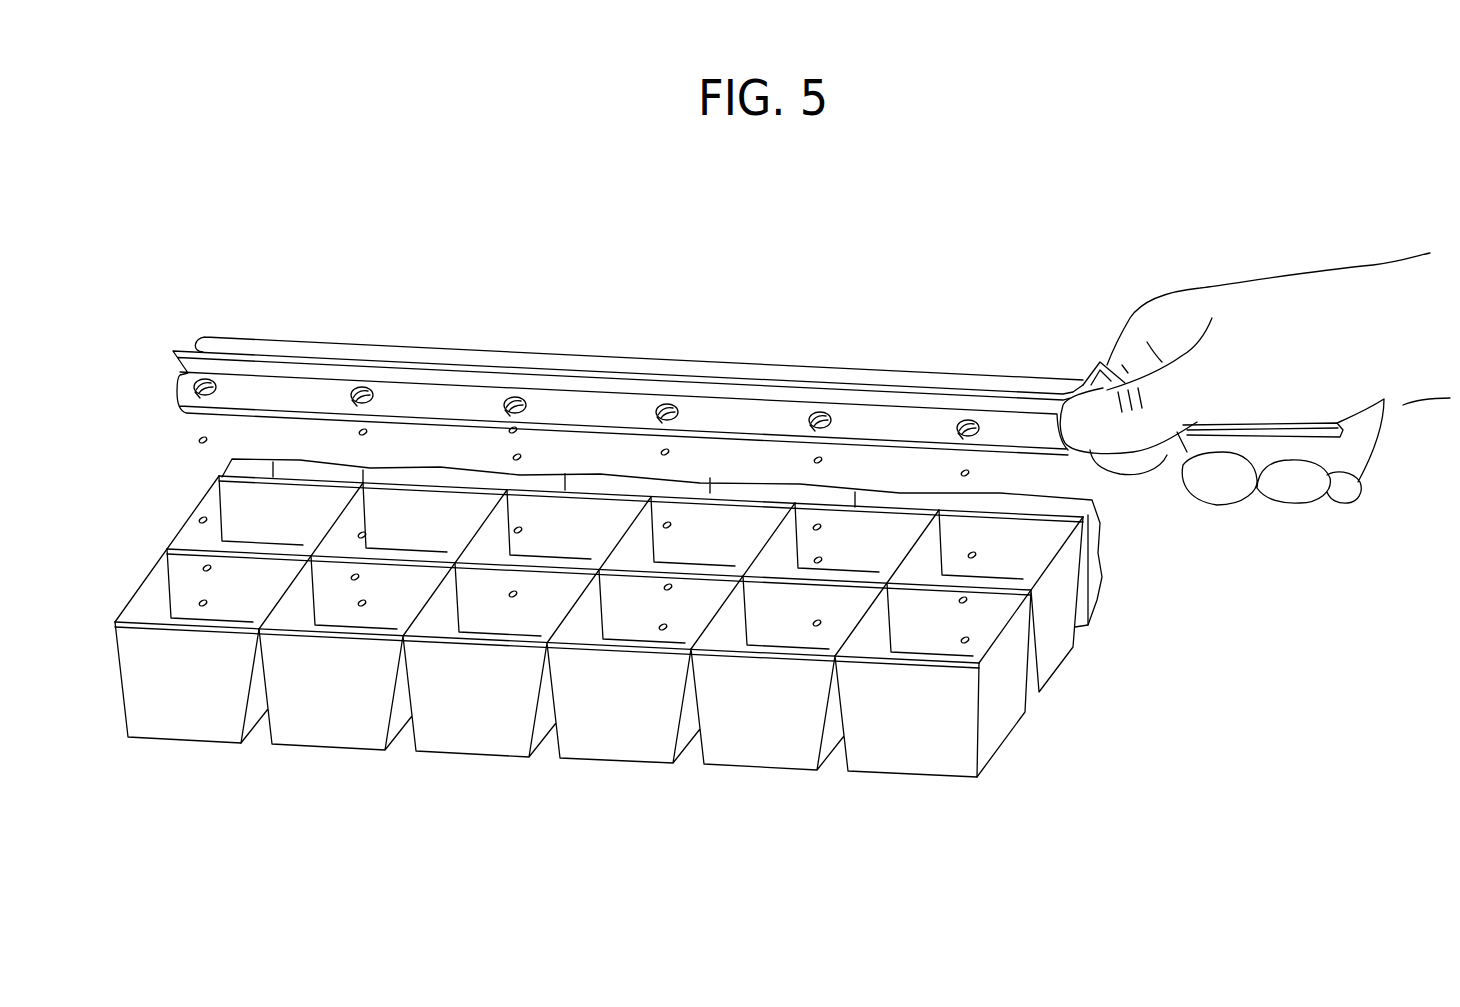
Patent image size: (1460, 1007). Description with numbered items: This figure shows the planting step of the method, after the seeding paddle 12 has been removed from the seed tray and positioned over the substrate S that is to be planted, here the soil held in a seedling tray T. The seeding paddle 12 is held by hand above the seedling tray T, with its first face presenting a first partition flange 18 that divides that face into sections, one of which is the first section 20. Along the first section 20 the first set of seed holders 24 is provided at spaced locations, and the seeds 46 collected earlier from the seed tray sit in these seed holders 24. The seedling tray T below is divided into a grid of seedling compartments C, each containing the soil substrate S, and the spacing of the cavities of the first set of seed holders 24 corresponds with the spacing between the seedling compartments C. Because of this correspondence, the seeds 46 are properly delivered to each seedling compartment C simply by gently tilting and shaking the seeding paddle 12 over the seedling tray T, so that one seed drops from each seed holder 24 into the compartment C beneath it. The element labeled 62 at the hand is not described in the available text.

The seeding paddle 12 is at (1017, 333).
The first partition flange 18 is at (583, 363).
The first section 20 is at (440, 400).
The first set of seed holders 24 is at (360, 386).
The seeds 46 is at (668, 403).
The pull strip 62 is at (1362, 442).
The seedling compartments C is at (157, 603).
The substrate S is at (372, 630).
The seedling tray T is at (187, 715).